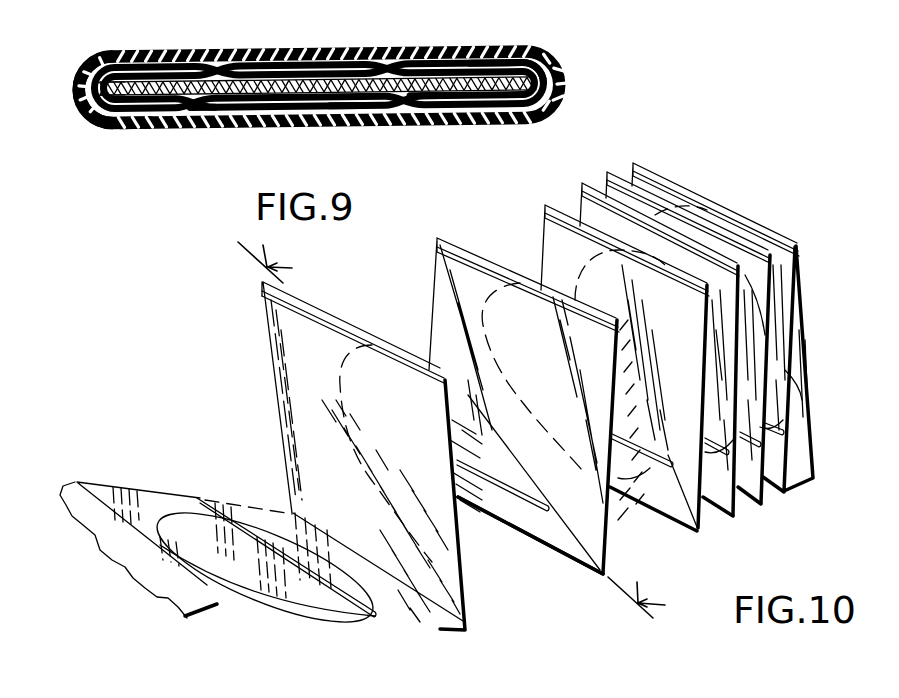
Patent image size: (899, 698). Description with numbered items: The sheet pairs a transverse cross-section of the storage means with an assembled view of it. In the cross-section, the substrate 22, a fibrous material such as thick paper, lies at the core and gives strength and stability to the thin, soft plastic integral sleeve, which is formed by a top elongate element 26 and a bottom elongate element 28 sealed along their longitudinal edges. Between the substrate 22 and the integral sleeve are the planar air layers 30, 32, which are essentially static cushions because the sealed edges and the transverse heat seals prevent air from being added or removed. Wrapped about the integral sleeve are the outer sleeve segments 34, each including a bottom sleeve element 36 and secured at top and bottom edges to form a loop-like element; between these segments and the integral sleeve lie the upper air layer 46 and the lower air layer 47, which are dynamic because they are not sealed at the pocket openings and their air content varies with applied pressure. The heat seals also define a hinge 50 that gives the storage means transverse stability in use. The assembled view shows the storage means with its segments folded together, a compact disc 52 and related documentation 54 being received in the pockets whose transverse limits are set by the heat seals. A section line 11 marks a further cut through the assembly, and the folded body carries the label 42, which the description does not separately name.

In FIG. 9, the substrate 22 is at (112, 88).
In FIG. 9, the top elongate element 26 is at (482, 62).
In FIG. 9, the bottom elongate element 28 is at (423, 99).
In FIG. 9, the planar air layer 30 is at (442, 80).
In FIG. 9, the planar air layer 32 is at (345, 113).
In FIG. 9, the outer sleeve segment 34 is at (313, 51).
In FIG. 9, the bottom sleeve element 36 is at (135, 129).
In FIG. 9, the upper air layer 46 is at (178, 64).
In FIG. 9, the lower air layer 47 is at (218, 112).
In FIG. 9, the hinge 50 is at (73, 95).
In FIG. 10, the hinge 50 is at (537, 532).
In FIG. 10, the section line 11 is at (472, 421).
In FIG. 10, the pleated filter element 42 is at (434, 268).
In FIG. 10, the compact disc 52 is at (190, 523).
In FIG. 10, the related documentation 54 is at (484, 258).